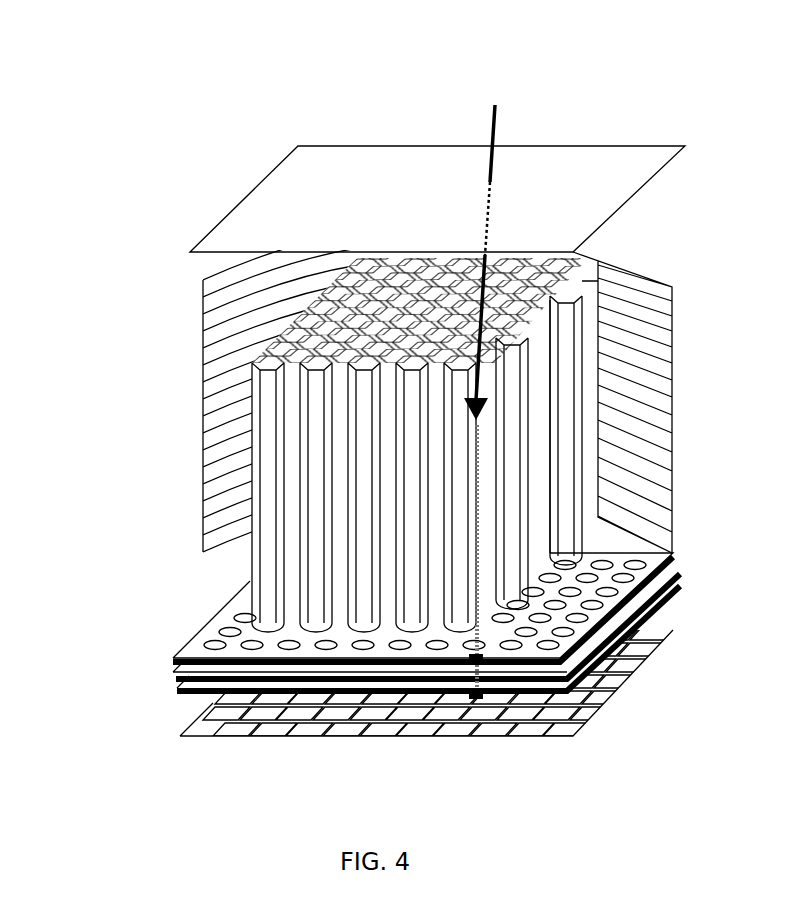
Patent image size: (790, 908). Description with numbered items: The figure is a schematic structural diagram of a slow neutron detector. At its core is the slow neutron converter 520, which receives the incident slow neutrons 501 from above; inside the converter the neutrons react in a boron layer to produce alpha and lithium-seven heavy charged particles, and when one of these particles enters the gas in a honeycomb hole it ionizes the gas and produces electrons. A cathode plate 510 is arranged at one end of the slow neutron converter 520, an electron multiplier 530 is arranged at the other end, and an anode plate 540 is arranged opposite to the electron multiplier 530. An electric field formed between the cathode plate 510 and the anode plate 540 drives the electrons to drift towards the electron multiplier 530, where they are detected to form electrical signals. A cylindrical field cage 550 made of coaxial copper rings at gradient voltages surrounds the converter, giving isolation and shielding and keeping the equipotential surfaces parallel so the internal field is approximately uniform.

The incident slow neutrons 501 is at (497, 120).
The cathode plate 510 is at (312, 163).
The slow neutron converter 520 is at (218, 495).
The electron multiplier 530 is at (223, 613).
The anode plate 540 is at (212, 733).
The field cage 550 is at (212, 373).